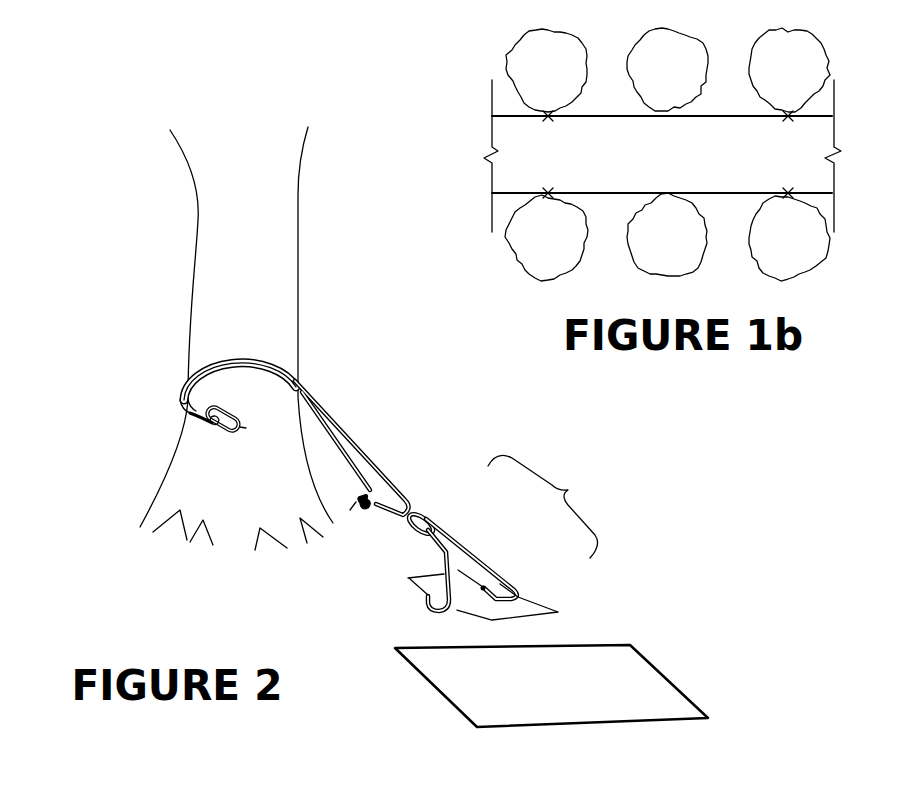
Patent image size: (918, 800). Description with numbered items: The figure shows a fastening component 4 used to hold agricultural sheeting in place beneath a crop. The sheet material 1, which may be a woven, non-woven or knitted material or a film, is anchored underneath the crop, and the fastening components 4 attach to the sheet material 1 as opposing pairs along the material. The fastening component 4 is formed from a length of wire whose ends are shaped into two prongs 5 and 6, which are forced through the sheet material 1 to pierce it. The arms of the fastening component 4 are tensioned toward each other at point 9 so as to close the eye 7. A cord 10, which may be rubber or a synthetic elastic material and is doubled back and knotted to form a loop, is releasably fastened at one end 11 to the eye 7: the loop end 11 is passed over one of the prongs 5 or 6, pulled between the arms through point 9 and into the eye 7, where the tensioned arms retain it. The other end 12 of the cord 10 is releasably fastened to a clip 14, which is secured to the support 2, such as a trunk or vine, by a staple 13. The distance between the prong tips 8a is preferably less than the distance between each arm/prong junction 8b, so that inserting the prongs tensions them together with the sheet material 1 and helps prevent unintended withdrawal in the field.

In FIG. 1B, the sheet material 1 is at (730, 123).
In FIG. 2, the sheet material 1 is at (448, 680).
In FIG. 2, the support 2 is at (207, 268).
In FIG. 1B, the fastening component 4 is at (787, 189).
In FIG. 2, the fastening component 4 is at (543, 506).
In FIG. 2, the prong 5 is at (505, 584).
In FIG. 2, the prong 6 is at (413, 605).
In FIG. 2, the eye 7 is at (435, 520).
In FIG. 2, the distance between prong tips 8a is at (425, 576).
In FIG. 2, the distance between arm/prong junctions 8b is at (516, 616).
In FIG. 2, the point between arms 9 is at (452, 548).
In FIG. 2, the cord 10 is at (330, 416).
In FIG. 2, the first end of cord 11 is at (393, 477).
In FIG. 2, the second end of cord 12 is at (205, 418).
In FIG. 2, the staple 13 is at (244, 428).
In FIG. 2, the clip 14 is at (207, 422).